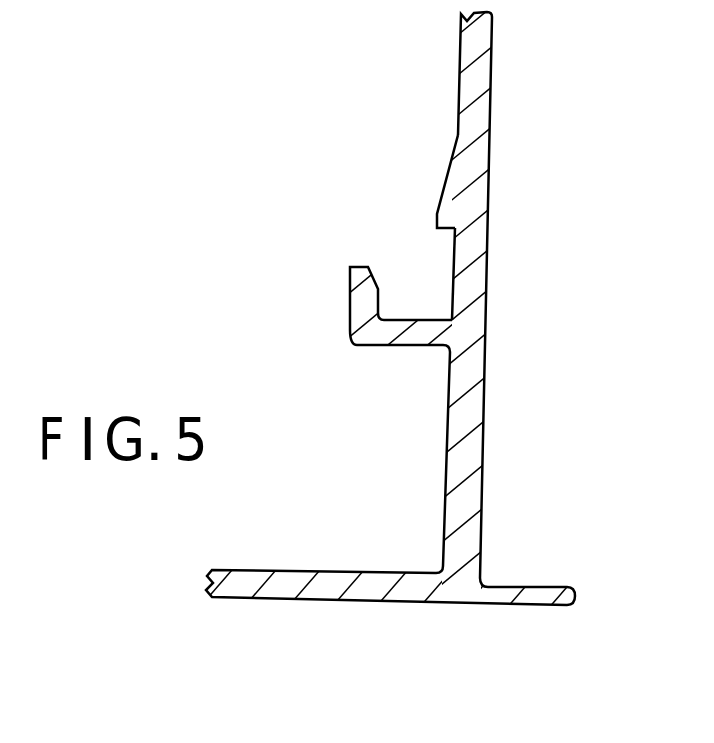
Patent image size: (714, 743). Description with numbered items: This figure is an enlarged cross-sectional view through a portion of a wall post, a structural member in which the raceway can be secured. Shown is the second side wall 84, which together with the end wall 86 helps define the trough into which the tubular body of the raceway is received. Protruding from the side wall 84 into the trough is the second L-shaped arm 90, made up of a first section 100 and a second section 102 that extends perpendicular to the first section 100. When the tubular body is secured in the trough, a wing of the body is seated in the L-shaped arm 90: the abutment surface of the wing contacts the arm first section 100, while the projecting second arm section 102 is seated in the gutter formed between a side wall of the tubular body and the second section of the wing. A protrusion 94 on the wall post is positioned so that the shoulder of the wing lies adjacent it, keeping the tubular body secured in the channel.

The second side wall 84 is at (468, 459).
The end wall 86 is at (340, 583).
The second L-shaped arm 90 is at (362, 360).
The protrusion 94 is at (440, 210).
The first section 100 is at (423, 332).
The second section 102 is at (258, 235).